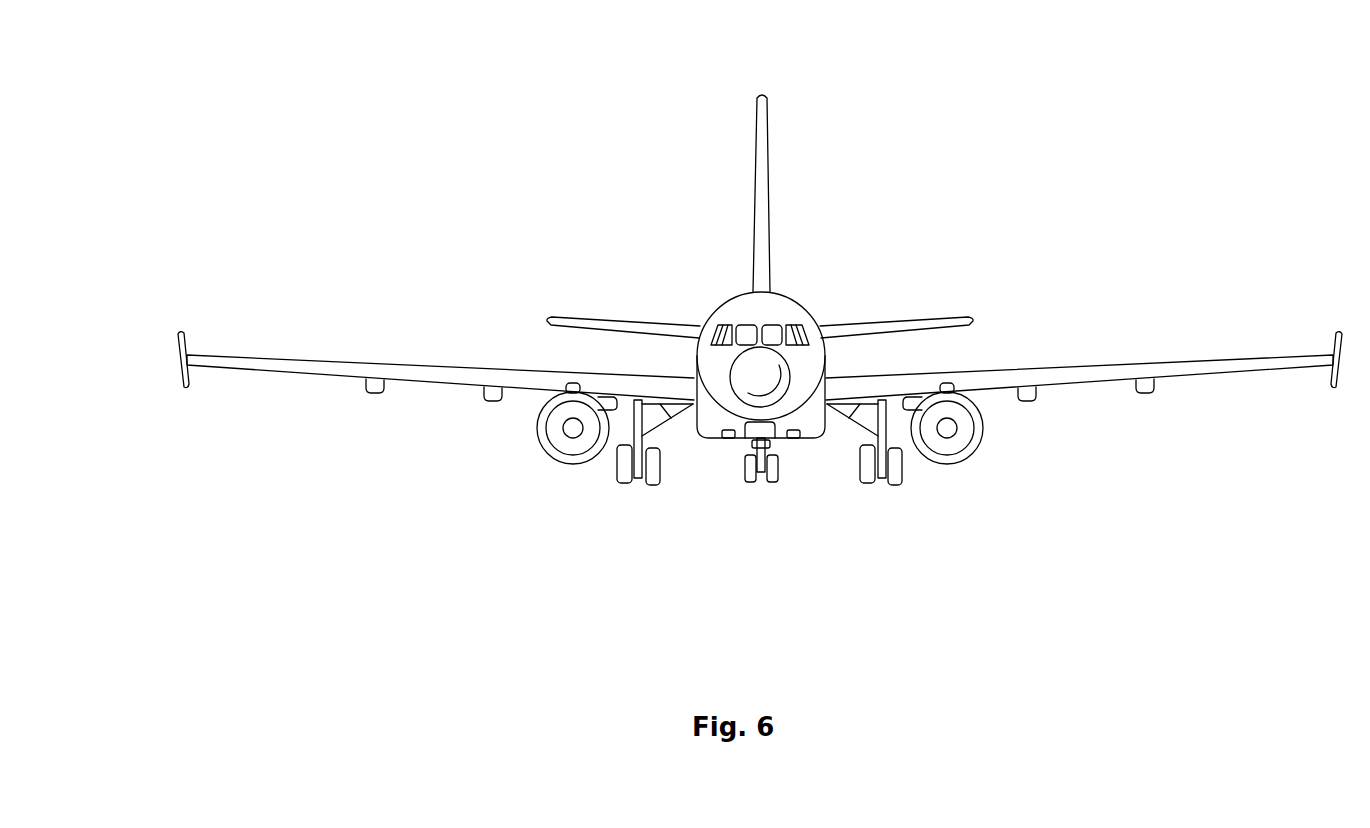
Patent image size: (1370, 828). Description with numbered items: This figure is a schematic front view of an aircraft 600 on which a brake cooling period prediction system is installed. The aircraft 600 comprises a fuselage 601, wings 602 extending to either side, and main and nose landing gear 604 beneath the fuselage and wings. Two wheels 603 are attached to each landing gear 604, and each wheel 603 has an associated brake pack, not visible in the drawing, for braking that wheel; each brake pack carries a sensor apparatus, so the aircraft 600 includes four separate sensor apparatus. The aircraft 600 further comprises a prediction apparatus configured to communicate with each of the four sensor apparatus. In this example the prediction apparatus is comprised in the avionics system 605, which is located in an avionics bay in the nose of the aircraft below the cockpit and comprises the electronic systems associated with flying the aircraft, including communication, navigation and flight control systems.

The aircraft 600 is at (534, 77).
The fuselage 601 is at (787, 310).
The wings 602 is at (990, 377).
The wheels 603 is at (622, 483).
The main and nose landing gear 604 is at (640, 436).
The avionics system 605 is at (755, 362).